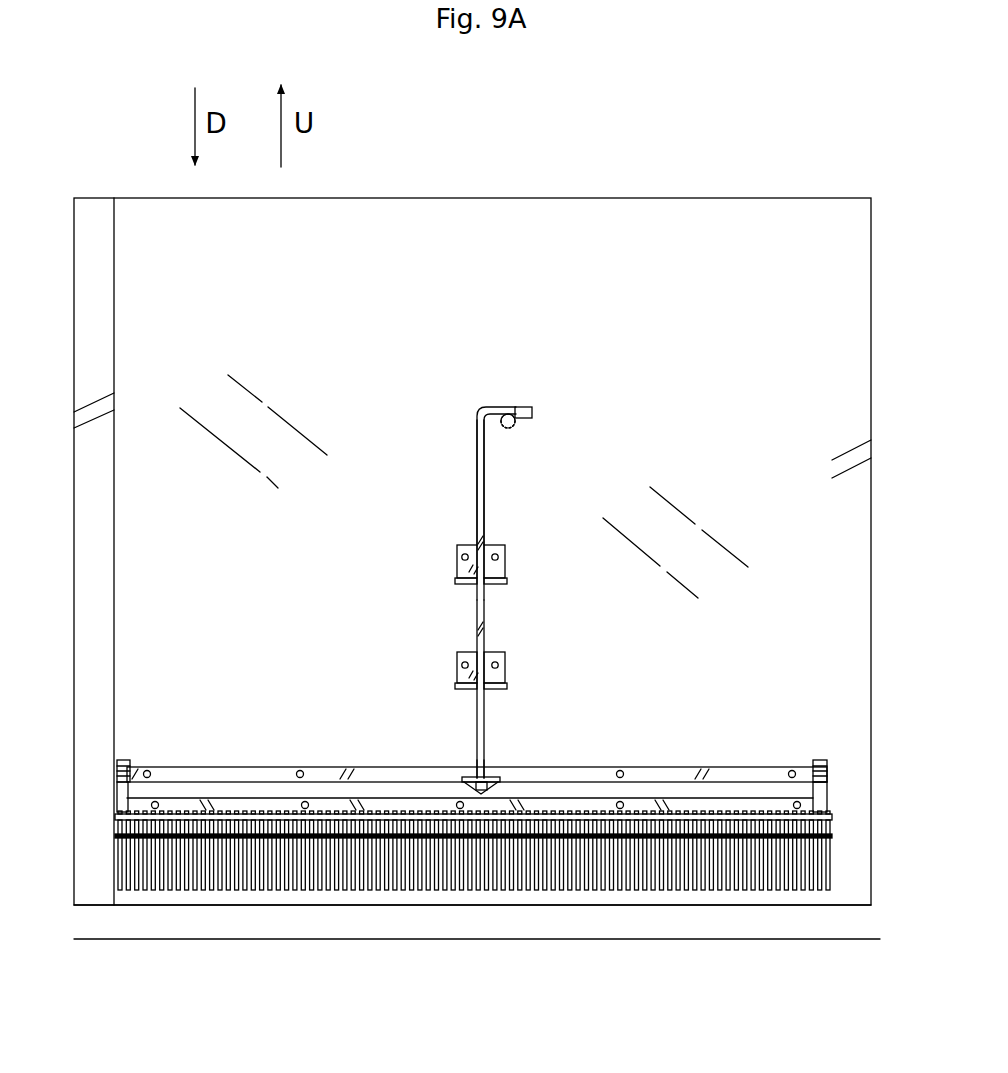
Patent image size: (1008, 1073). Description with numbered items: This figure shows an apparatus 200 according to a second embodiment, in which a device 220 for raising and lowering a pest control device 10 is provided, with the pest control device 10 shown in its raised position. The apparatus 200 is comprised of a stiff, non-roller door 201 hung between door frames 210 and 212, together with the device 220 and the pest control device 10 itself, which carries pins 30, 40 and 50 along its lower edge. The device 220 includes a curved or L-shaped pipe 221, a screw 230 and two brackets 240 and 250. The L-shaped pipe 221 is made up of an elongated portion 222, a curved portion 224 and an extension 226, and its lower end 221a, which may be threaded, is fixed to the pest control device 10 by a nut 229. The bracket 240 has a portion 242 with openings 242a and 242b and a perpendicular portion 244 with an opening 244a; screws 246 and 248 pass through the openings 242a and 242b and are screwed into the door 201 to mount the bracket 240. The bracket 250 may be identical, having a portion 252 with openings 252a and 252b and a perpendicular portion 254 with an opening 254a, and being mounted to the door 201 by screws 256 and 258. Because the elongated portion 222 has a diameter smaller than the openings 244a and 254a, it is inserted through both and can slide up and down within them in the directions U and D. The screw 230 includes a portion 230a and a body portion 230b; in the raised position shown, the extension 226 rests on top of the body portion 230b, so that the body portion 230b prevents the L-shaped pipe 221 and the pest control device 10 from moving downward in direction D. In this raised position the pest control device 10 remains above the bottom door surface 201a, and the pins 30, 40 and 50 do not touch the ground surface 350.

The pest control device 10 is at (473, 816).
The pin 30 is at (285, 904).
The pin 40 is at (343, 904).
The pin 50 is at (386, 904).
The apparatus 200 is at (667, 177).
The door 201 is at (755, 185).
The bottom door surface 201a is at (590, 905).
The door frame 210 is at (83, 225).
The door frame 212 is at (846, 252).
The device for raising and lowering 220 is at (484, 436).
The L-shaped pipe 221 is at (477, 413).
The end of L-shaped pipe 221a is at (462, 778).
The elongated portion 222 is at (478, 602).
The curved portion 224 is at (477, 420).
The extension 226 is at (514, 411).
The nut 229 is at (500, 780).
The screw 230 is at (511, 425).
The portion of screw 230a is at (515, 423).
The body portion of screw 230b is at (510, 412).
The bracket 240 is at (483, 548).
The portion of bracket 242 is at (483, 539).
The opening 242a is at (464, 556).
The opening 242b is at (500, 558).
The portion of bracket 244 is at (470, 596).
The opening 244a is at (462, 581).
The screw 246 is at (466, 553).
The screw 248 is at (495, 553).
The bracket 250 is at (489, 674).
The portion of bracket 252 is at (489, 657).
The opening 252a is at (462, 668).
The opening 252b is at (500, 660).
The portion of bracket 254 is at (476, 705).
The opening 254a is at (460, 686).
The screw 256 is at (465, 662).
The screw 258 is at (495, 661).
The ground surface 350 is at (508, 980).